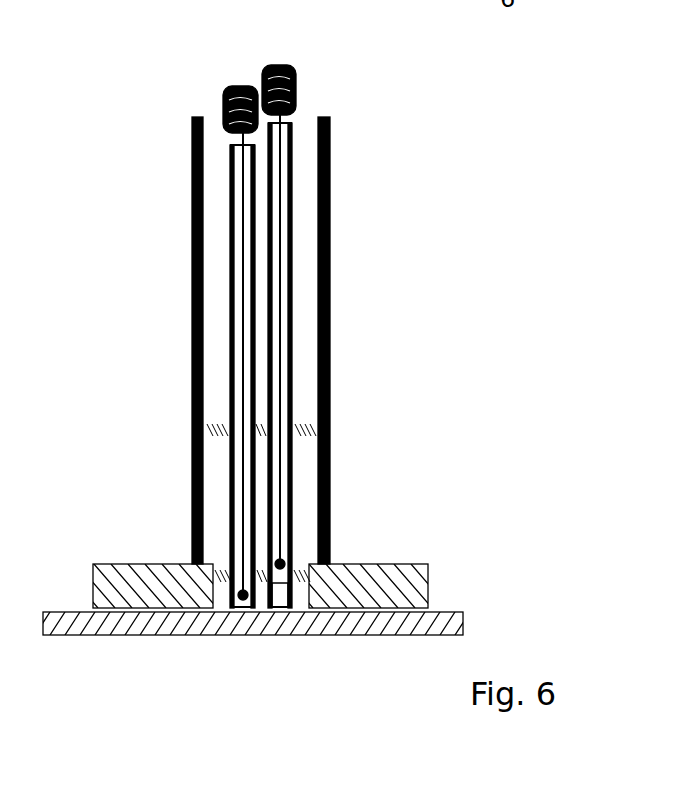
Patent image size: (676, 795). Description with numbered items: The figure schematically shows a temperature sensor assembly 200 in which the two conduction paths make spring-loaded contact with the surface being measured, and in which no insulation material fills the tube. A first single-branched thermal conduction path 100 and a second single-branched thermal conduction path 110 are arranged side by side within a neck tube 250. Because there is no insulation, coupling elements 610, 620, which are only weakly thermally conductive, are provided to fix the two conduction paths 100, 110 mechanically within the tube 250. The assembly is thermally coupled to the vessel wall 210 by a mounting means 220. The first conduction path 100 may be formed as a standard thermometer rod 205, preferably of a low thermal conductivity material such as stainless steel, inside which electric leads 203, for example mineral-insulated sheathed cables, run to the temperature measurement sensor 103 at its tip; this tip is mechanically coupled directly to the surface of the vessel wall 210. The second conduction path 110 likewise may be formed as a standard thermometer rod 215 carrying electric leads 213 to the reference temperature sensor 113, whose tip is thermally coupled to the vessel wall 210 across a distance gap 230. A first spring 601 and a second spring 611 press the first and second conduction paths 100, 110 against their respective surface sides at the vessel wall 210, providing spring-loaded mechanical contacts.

The first single-branched thermal conduction path 100 is at (159, 305).
The second single-branched thermal conduction path 110 is at (359, 304).
The first spring 601 is at (222, 104).
The second spring 611 is at (303, 89).
The temperature sensor assembly 200 is at (308, 410).
The neck tube 250 is at (191, 152).
The standard thermometer rod 205 is at (229, 330).
The standard thermometer rod 215 is at (293, 327).
The coupling element 620 is at (212, 414).
The electric leads 203 is at (237, 493).
The electric leads 213 is at (283, 471).
The reference temperature sensor 113 is at (284, 557).
The temperature measurement sensor 103 is at (237, 586).
The distance gap 230 is at (289, 596).
The mounting means 220 is at (426, 551).
The vessel wall 210 is at (466, 599).
The coupling element 610 is at (222, 585).